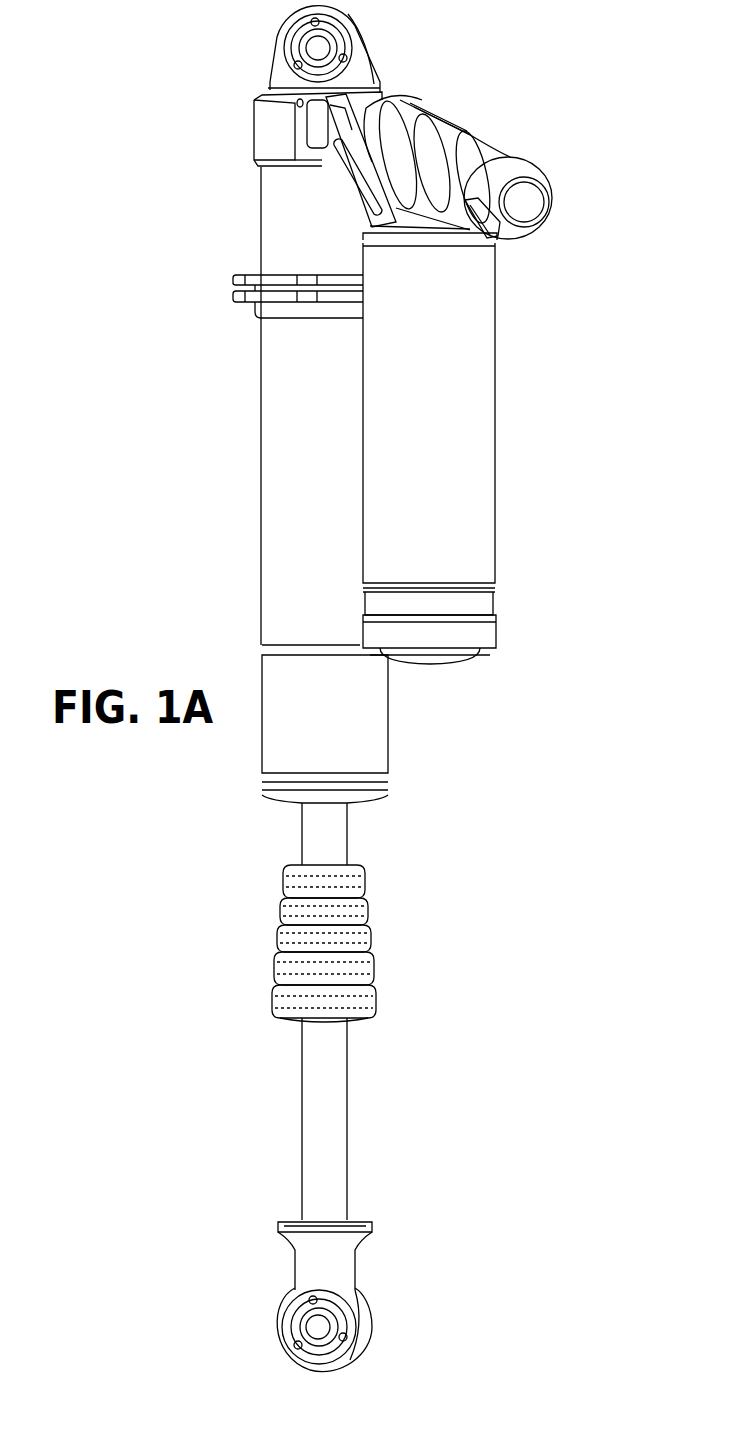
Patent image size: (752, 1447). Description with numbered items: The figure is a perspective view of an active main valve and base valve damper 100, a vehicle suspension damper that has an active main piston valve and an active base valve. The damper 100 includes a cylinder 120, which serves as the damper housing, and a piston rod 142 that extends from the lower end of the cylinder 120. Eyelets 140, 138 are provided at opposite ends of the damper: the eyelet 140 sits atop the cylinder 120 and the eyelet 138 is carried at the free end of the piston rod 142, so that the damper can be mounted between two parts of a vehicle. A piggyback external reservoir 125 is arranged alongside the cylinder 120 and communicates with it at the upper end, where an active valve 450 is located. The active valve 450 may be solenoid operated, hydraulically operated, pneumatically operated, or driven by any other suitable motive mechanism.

The active main valve and base valve damper 100 is at (486, 35).
The eyelet 140 is at (300, 45).
The cylinder 120 is at (261, 373).
The external reservoir 125 is at (495, 410).
The active valve 450 is at (535, 170).
The piston rod 142 is at (347, 1115).
The eyelet 138 is at (302, 1325).